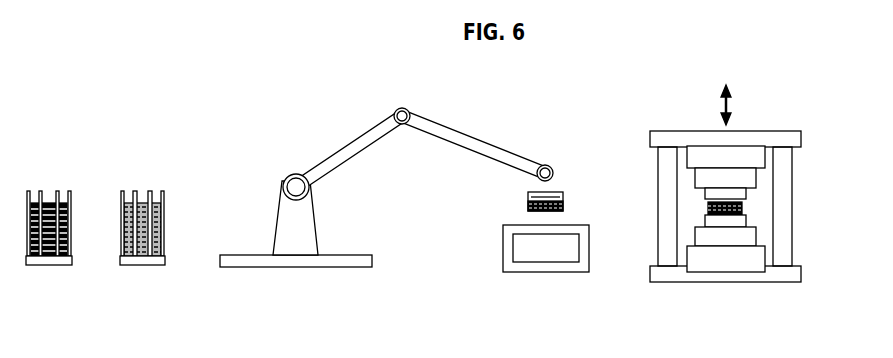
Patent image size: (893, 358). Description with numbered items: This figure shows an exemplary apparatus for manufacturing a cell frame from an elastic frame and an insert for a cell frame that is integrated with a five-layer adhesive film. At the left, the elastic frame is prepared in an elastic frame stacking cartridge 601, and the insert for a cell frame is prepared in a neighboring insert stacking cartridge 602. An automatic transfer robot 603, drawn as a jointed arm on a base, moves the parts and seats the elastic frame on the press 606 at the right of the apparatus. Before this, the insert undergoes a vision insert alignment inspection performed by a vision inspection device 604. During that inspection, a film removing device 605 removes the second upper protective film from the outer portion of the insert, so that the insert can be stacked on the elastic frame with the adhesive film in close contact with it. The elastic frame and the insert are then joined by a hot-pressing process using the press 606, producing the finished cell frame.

The elastic frame stacking cartridge 601 is at (46, 265).
The insert stacking cartridge 602 is at (141, 265).
The automatic transfer robot 603 is at (274, 222).
The vision inspection device 604 is at (545, 272).
The film removing device 605 is at (523, 217).
The press 606 is at (780, 131).